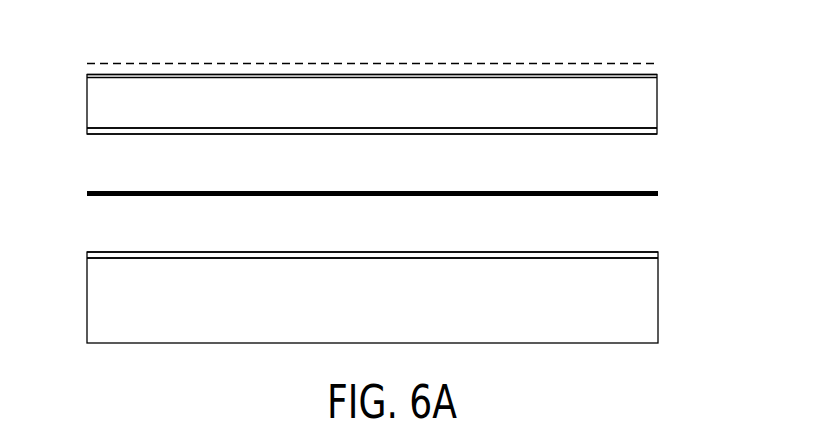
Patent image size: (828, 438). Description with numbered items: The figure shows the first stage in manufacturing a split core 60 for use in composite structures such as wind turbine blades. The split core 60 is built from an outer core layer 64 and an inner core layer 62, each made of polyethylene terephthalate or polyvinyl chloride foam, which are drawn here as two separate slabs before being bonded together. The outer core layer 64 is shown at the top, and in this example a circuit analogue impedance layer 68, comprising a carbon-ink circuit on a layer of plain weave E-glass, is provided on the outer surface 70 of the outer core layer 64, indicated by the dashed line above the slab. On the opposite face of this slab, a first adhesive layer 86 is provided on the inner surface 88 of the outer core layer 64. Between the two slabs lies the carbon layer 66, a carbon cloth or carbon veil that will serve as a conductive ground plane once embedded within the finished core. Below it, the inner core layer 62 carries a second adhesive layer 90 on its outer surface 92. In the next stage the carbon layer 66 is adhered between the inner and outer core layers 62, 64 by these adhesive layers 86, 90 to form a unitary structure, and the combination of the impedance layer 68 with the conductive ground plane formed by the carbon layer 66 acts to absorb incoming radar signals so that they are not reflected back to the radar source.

The split core 60 is at (705, 163).
The inner core layer 62 is at (103, 296).
The outer core layer 64 is at (100, 106).
The carbon layer 66 is at (651, 191).
The impedance layer 68 is at (538, 62).
The outer surface of the outer core layer 70 is at (128, 74).
The first adhesive layer 86 is at (375, 135).
The inner surface of the outer core layer 88 is at (145, 134).
The second adhesive layer 90 is at (221, 252).
The outer surface of the inner core layer 92 is at (478, 255).